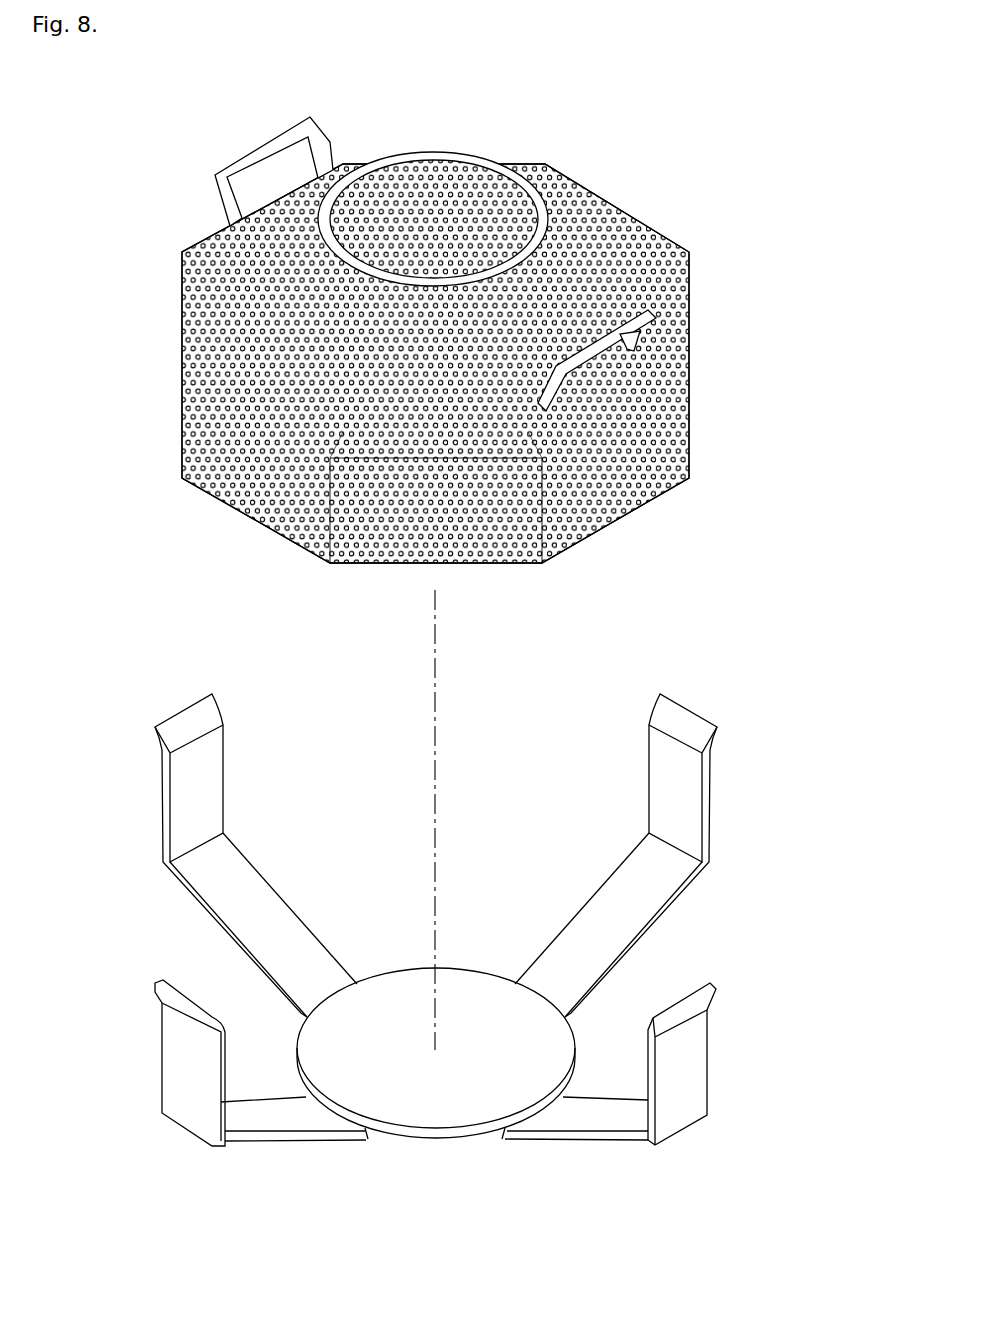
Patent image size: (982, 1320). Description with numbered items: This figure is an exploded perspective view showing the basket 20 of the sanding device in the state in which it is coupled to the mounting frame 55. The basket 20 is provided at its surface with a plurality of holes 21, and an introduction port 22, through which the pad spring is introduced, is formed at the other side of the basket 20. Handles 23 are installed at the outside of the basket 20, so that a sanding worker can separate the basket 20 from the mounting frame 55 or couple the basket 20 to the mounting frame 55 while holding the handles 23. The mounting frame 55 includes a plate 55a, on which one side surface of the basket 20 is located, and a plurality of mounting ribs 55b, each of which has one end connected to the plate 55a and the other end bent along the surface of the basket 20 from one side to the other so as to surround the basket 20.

The basket 20 is at (468, 319).
The holes 21 is at (247, 263).
The introduction port 22 is at (433, 188).
The handles 23 is at (262, 152).
The mounting frame 55 is at (516, 951).
The plate 55a is at (440, 1100).
The mounting ribs 55b is at (690, 1058).